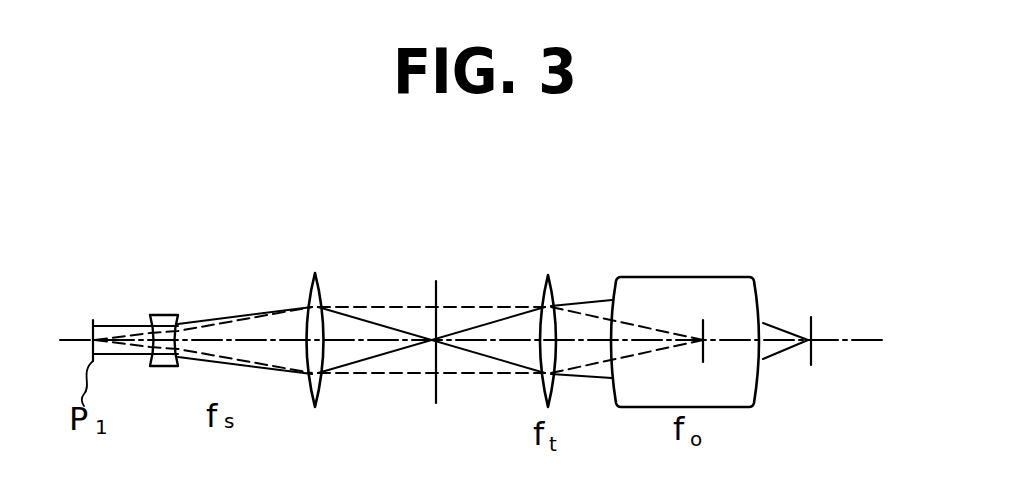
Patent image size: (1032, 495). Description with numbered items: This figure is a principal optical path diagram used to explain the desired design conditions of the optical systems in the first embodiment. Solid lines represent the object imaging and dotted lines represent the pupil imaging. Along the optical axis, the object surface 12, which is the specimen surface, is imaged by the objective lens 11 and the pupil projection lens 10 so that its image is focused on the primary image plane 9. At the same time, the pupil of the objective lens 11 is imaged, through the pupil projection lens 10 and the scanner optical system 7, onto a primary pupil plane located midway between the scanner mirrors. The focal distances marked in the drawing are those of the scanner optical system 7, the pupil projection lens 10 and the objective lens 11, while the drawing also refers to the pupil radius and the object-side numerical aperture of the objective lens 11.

The scanner optical system 7 is at (337, 268).
The primary image plane 9 is at (436, 281).
The pupil projection lens 10 is at (553, 286).
The objective lens 11 is at (725, 277).
The object surface 12 is at (812, 318).